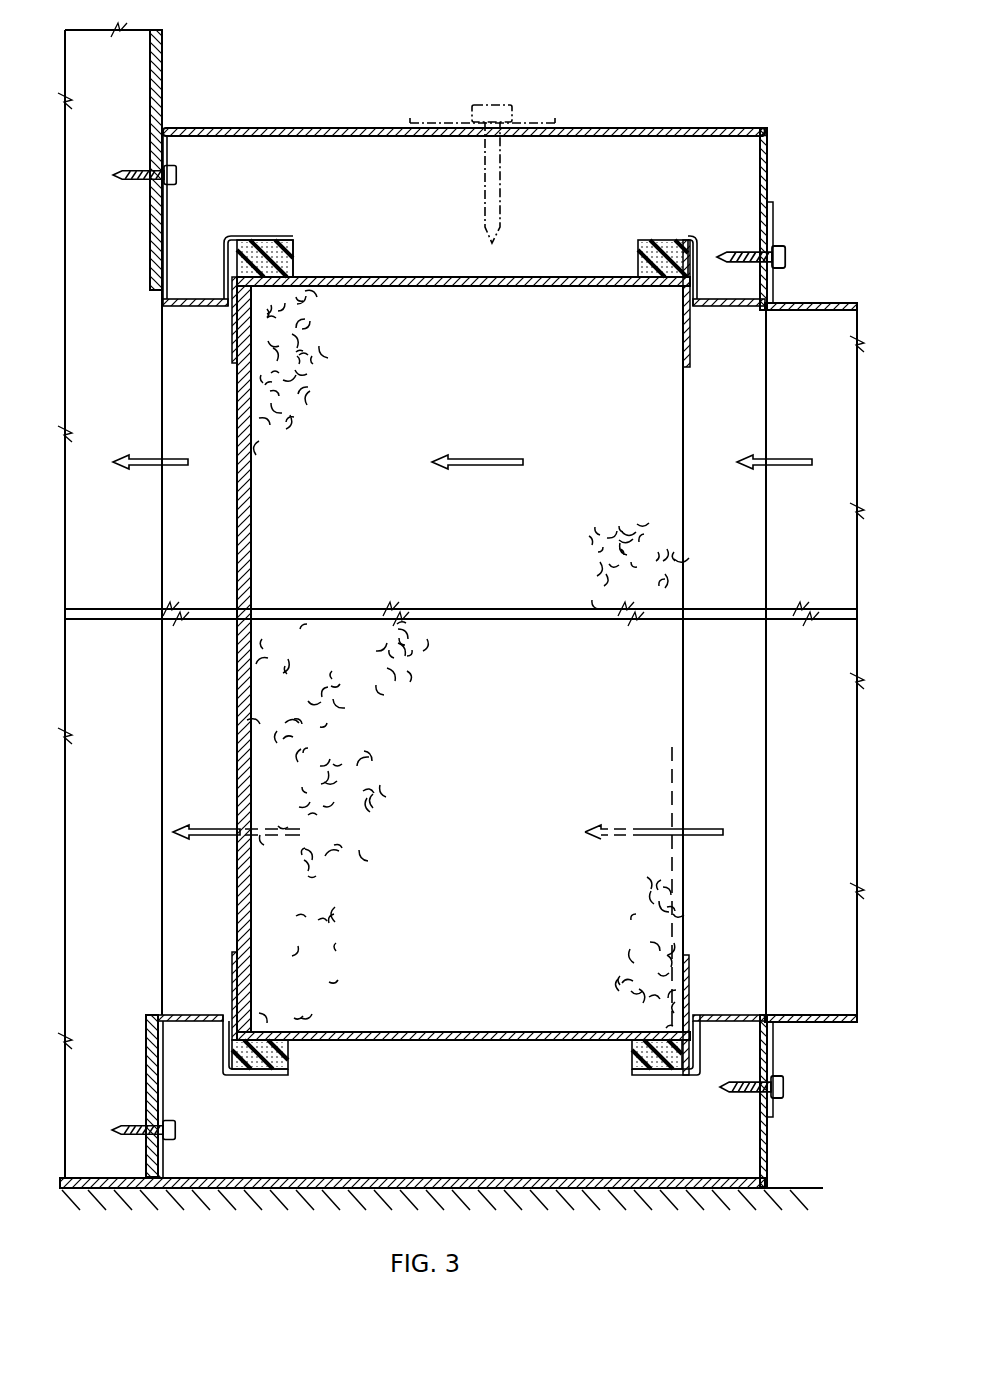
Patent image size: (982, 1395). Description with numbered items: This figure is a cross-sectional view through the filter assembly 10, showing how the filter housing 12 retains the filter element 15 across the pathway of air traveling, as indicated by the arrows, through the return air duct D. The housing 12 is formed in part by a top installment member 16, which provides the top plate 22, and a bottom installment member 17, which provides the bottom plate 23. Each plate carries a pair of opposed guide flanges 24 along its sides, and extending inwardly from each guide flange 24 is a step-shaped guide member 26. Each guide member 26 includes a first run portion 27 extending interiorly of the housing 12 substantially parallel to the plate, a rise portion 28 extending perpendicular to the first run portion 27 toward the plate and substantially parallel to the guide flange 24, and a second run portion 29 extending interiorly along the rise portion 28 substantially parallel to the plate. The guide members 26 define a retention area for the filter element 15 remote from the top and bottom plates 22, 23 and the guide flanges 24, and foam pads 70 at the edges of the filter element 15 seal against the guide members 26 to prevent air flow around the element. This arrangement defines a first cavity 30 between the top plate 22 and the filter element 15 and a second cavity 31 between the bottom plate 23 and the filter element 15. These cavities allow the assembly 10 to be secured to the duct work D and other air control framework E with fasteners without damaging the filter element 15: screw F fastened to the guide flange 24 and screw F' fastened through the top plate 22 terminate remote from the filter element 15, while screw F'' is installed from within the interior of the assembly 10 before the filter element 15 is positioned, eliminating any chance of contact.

The filter assembly 10 is at (600, 79).
The filter housing 12 is at (657, 122).
The filter element 15 is at (560, 275).
The top installment member 16 is at (755, 122).
The bottom installment member 17 is at (768, 1160).
The top plate 22 is at (345, 127).
The bottom plate 23 is at (505, 1179).
The guide flange 24 is at (160, 250).
The guide member 26 is at (217, 310).
The first run portion 27 is at (190, 303).
The rise portion 28 is at (225, 255).
The second run portion 29 is at (263, 240).
The first cavity 30 is at (550, 177).
The second cavity 31 is at (330, 1160).
The foam pad 70 is at (294, 254).
The air control framework E is at (163, 52).
The return air duct D is at (823, 300).
The screw F is at (773, 649).
The screw F' is at (482, 147).
The screw F'' is at (181, 661).